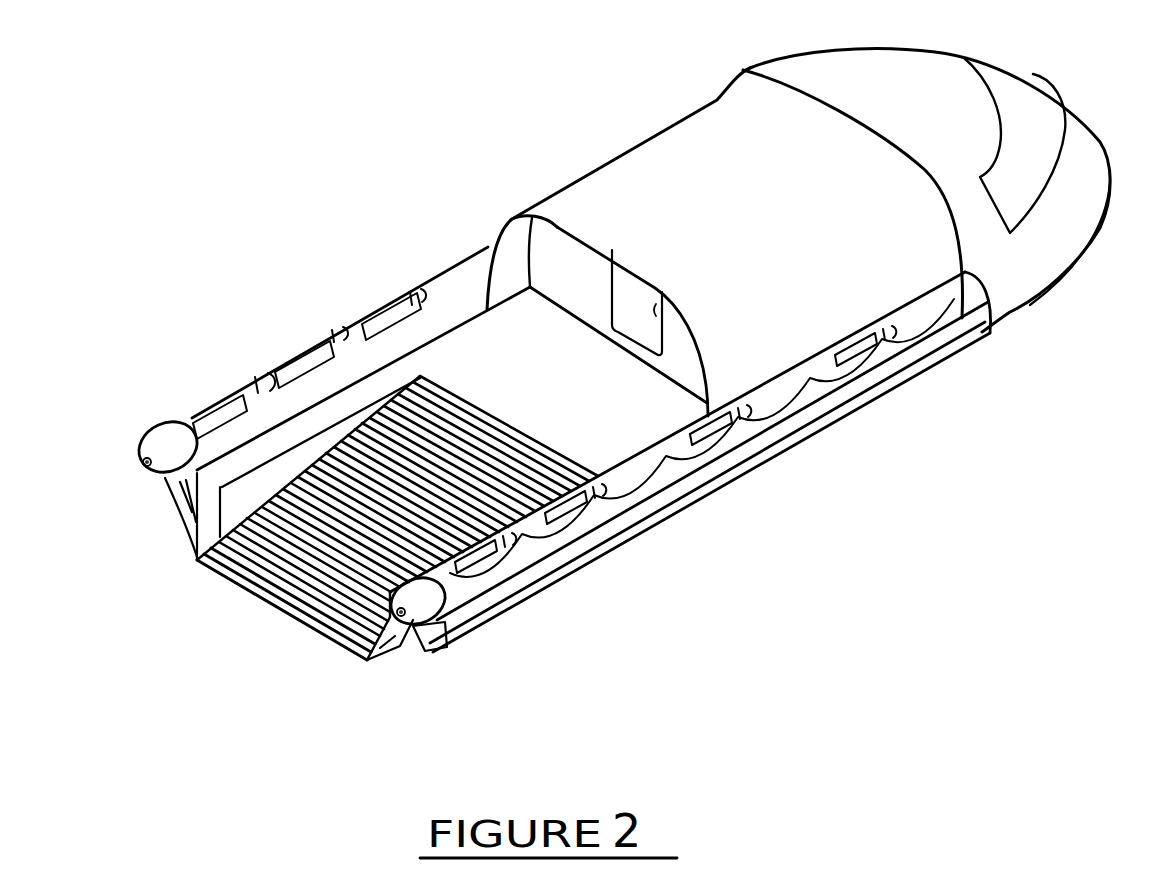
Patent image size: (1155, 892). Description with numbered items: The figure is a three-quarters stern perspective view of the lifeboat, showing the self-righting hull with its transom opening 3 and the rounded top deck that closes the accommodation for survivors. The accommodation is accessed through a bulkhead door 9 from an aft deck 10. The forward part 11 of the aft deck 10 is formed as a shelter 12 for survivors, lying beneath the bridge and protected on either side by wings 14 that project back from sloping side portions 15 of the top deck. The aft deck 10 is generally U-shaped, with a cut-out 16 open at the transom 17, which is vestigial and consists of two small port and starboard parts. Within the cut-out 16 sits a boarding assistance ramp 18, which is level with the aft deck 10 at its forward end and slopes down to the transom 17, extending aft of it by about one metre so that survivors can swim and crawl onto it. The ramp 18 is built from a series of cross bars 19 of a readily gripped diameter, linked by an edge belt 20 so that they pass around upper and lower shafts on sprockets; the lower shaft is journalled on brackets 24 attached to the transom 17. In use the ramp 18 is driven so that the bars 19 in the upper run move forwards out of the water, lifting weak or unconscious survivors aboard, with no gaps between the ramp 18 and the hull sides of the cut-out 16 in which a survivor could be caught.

The transom opening 3 is at (245, 490).
The bulkhead door 9 is at (632, 302).
The aft deck 10 is at (383, 380).
The forward part of the aft deck 11 is at (597, 405).
The shelter 12 is at (532, 285).
The wings 14 is at (740, 353).
The sloping side portions of the top deck 15 is at (893, 243).
The cut-out 16 is at (324, 440).
The transom 17 is at (455, 632).
The boarding assistance ramp 18 is at (280, 610).
The cross bars 19 is at (324, 613).
The edge belt 20 is at (214, 538).
The brackets 24 is at (393, 640).